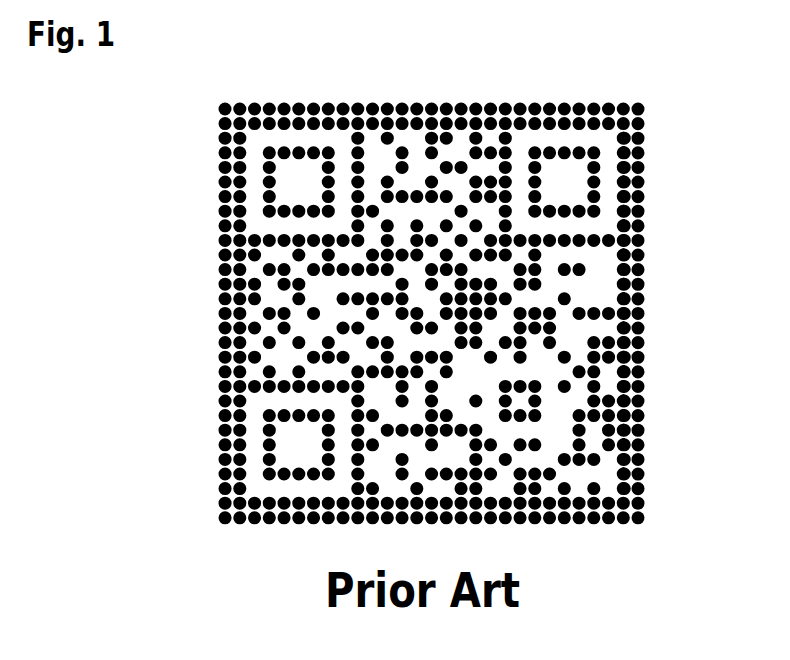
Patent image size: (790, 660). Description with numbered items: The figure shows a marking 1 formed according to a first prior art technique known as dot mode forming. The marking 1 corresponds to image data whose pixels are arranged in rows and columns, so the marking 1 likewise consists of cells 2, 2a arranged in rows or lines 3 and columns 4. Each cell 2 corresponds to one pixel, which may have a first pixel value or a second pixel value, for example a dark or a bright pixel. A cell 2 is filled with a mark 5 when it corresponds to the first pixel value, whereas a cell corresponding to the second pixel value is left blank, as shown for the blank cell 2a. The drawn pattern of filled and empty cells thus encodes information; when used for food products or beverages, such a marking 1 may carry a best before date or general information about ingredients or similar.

The marking 1 is at (171, 236).
The cell 2 is at (223, 106).
The blank cell 2a is at (306, 172).
The row 3 is at (650, 110).
The column 4 is at (588, 92).
The mark 5 is at (640, 521).